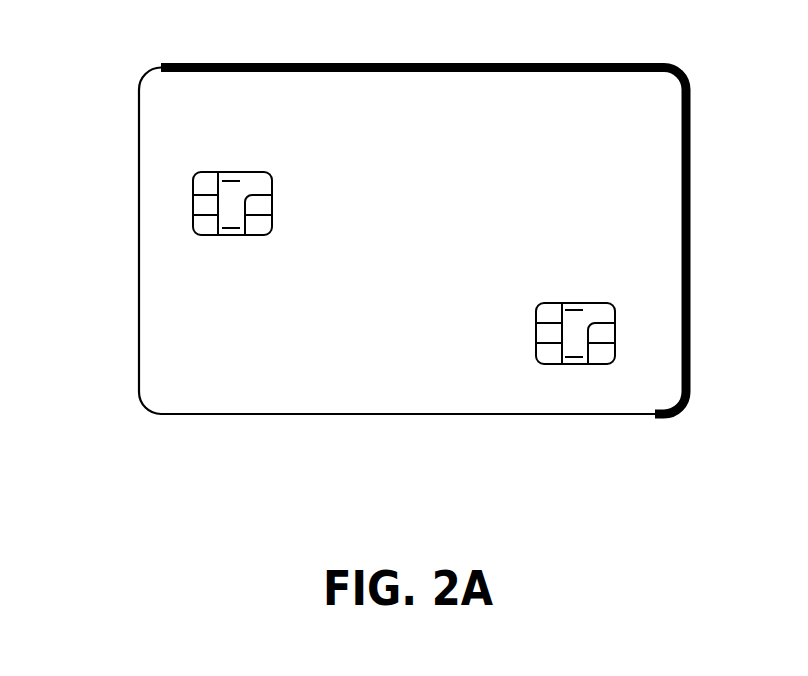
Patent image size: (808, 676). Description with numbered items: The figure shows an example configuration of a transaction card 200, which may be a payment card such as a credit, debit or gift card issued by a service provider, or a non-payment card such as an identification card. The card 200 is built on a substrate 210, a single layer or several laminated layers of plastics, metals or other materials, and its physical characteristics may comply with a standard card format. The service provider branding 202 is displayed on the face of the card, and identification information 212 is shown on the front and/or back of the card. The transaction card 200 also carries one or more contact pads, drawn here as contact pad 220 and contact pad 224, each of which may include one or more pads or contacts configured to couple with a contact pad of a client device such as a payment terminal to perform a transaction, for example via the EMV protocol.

The transaction card 200 is at (404, 267).
The service provider name/branding 202 is at (518, 91).
The substrate 210 is at (652, 177).
The identification information 212 is at (158, 315).
The contact pad 220 is at (189, 207).
The contact pad 224 is at (582, 367).